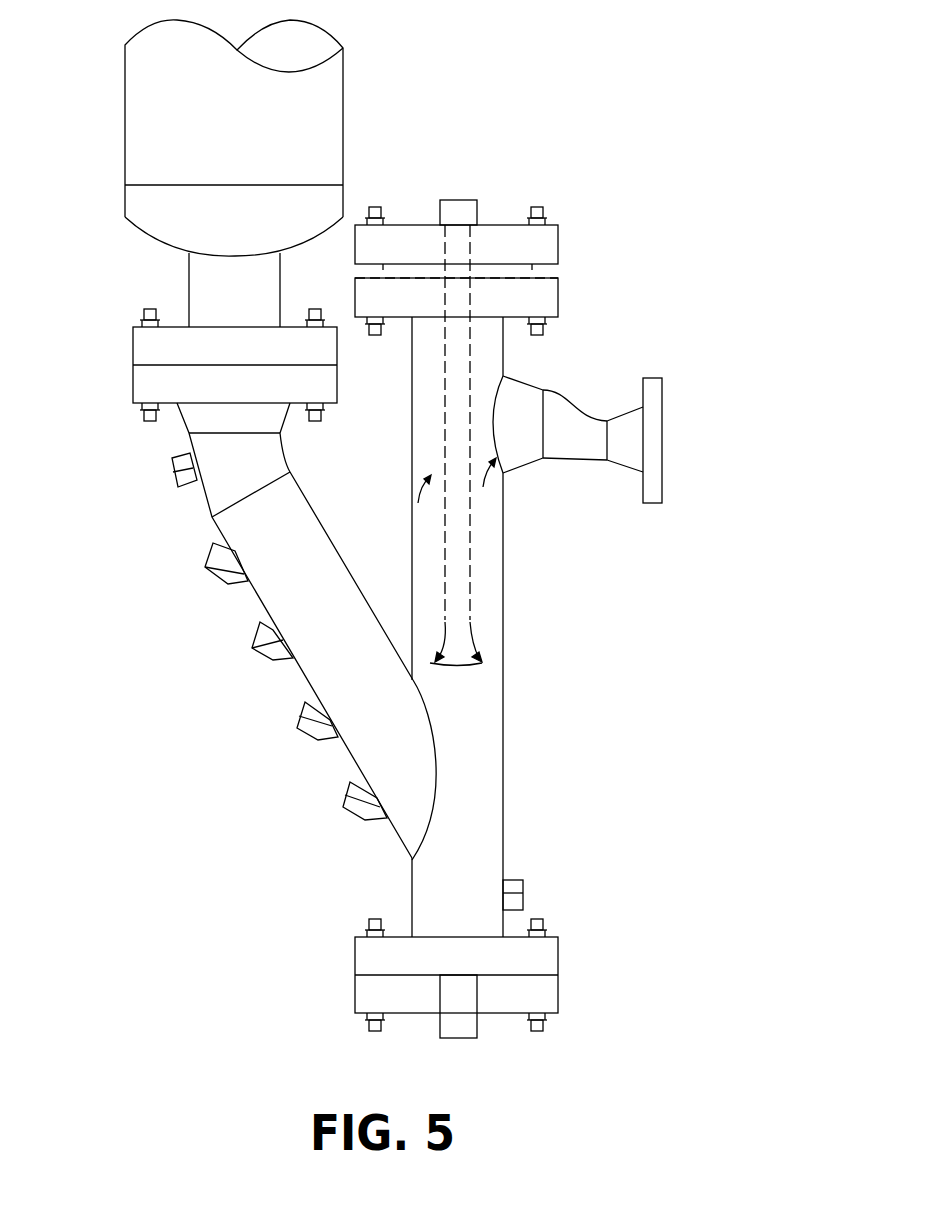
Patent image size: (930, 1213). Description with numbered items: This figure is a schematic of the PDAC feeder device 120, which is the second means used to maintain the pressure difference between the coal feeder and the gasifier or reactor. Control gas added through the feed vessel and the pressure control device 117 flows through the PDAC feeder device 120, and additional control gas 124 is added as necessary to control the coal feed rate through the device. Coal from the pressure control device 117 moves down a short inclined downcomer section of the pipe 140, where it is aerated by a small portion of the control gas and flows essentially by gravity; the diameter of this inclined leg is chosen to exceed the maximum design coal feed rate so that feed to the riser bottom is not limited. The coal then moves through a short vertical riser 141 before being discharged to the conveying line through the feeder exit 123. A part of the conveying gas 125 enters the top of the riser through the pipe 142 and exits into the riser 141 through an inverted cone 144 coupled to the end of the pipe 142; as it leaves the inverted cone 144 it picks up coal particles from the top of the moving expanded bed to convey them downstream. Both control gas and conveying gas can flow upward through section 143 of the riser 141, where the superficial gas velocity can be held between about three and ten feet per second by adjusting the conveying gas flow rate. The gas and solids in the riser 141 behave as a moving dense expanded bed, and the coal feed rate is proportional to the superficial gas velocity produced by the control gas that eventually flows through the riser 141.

The pressure control device 117 is at (357, 73).
The PDAC feeder device 120 is at (288, 810).
The feeder exit 123 is at (662, 377).
The additional control gas 124 is at (244, 637).
The conveying gas 125 is at (457, 194).
The inclined downcomer section 140 is at (306, 631).
The vertical riser 141 is at (505, 685).
The pipe 142 is at (445, 460).
The section 143 is at (487, 583).
The inverted cone 144 is at (430, 663).